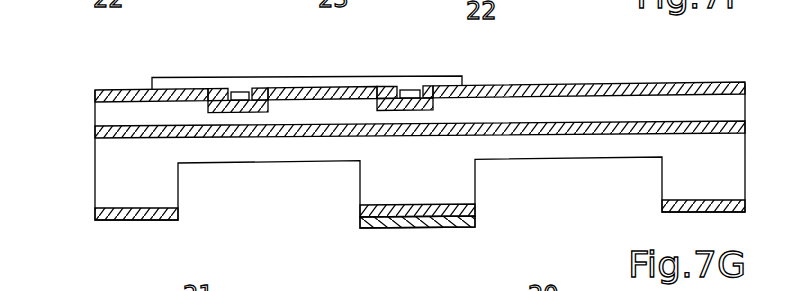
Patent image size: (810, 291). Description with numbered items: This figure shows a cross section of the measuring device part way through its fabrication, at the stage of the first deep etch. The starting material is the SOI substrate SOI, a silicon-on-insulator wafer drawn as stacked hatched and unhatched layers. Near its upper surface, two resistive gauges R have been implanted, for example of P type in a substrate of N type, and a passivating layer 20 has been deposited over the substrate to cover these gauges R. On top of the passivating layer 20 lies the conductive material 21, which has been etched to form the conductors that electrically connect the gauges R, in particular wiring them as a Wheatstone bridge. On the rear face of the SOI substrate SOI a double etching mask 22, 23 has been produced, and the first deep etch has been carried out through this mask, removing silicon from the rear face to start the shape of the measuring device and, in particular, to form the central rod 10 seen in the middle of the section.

The central rod 10 is at (374, 178).
The passivating layer 20 is at (563, 82).
The conductive material 21 is at (173, 88).
The etching mask 22 is at (128, 221).
The etching mask 23 is at (364, 230).
The resistive gauges R is at (221, 99).
The SOI substrate SOI is at (90, 103).